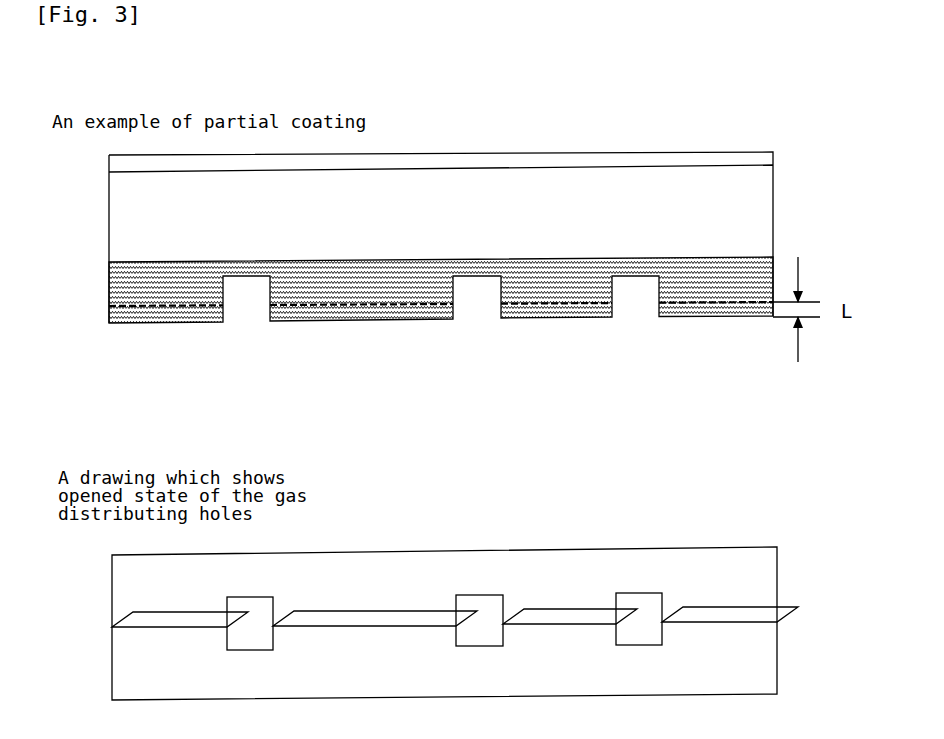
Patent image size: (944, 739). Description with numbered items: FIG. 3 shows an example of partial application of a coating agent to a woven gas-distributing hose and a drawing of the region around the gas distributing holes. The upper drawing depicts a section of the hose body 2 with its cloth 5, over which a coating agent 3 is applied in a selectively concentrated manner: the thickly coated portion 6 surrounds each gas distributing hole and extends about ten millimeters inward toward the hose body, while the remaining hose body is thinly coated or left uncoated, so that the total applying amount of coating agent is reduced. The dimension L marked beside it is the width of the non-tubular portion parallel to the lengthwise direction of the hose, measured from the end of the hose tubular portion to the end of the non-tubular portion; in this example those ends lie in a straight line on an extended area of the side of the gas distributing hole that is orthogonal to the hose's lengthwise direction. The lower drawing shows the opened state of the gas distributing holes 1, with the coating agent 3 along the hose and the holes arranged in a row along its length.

The gas distributing hole 1 is at (263, 607).
The gas distributing plate 2 is at (481, 376).
The coating film 3 is at (752, 157).
The base material 5 is at (441, 237).
The partially coated region 6 is at (362, 283).